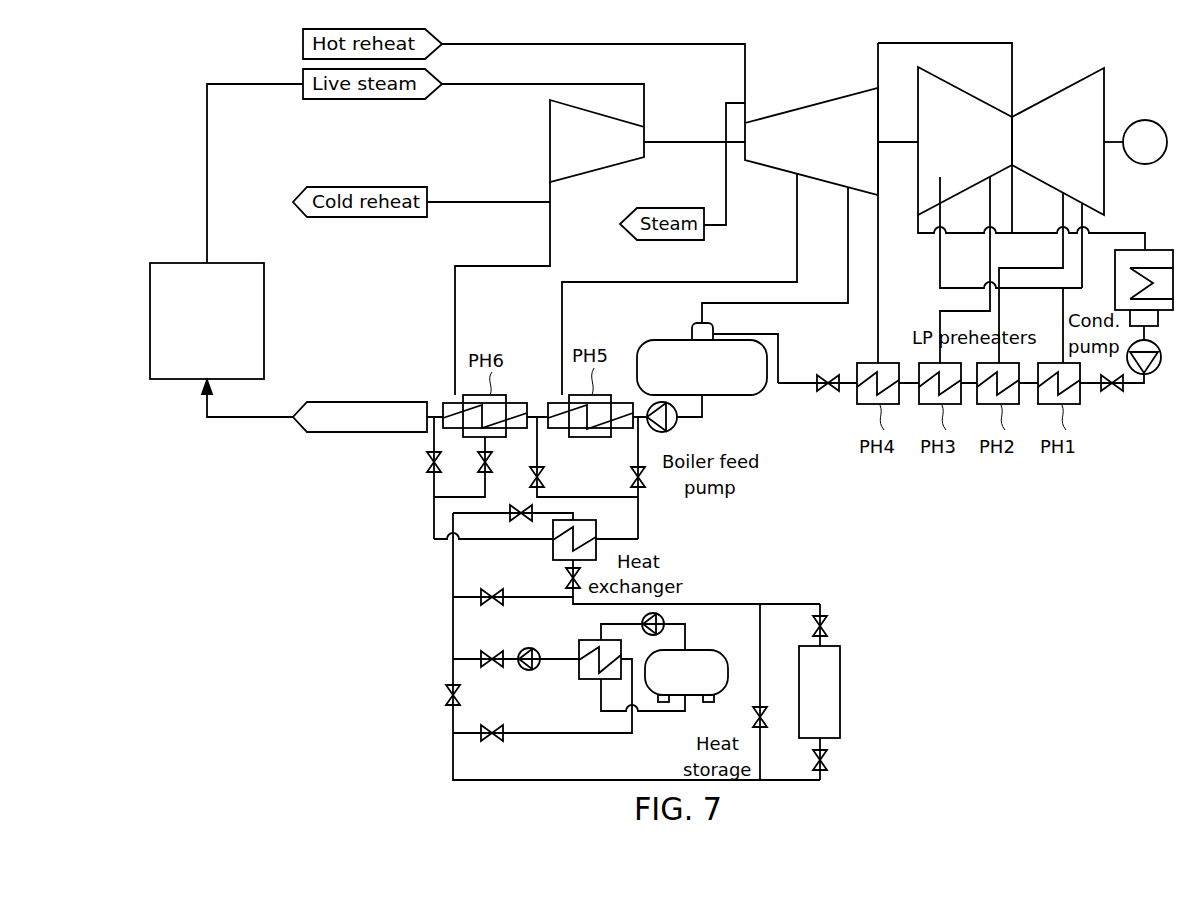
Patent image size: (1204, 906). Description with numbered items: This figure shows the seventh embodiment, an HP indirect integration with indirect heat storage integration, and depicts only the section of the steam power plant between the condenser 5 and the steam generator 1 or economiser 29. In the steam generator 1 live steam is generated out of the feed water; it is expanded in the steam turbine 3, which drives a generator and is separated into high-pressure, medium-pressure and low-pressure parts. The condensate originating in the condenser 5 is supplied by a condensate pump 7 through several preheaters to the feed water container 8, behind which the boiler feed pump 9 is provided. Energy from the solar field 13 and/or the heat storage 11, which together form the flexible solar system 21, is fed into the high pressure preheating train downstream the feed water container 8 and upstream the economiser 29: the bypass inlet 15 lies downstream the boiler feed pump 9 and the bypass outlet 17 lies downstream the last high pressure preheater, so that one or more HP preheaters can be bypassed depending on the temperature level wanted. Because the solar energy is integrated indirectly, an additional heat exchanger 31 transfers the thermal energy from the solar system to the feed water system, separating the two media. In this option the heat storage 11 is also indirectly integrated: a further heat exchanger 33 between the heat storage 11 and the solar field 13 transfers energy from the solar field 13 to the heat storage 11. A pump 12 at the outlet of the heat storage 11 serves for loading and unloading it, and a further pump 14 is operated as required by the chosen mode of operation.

The steam generator 1 is at (264, 320).
The steam turbine 3 is at (806, 76).
The condenser 5 is at (1163, 250).
The condensate pump 7 is at (1162, 352).
The feed water container 8 is at (668, 340).
The boiler feed pump 9 is at (678, 426).
The heat storage 11 is at (731, 668).
The pump 12 is at (670, 616).
The solar field 13 is at (840, 724).
The pump 14 is at (523, 649).
The bypass inlet 15 is at (648, 458).
The bypass outlet 17 is at (434, 440).
The flexible solar system 21 is at (889, 692).
The economiser 29 is at (348, 437).
The heat exchanger 31 is at (553, 553).
The heat exchanger 33 is at (580, 675).